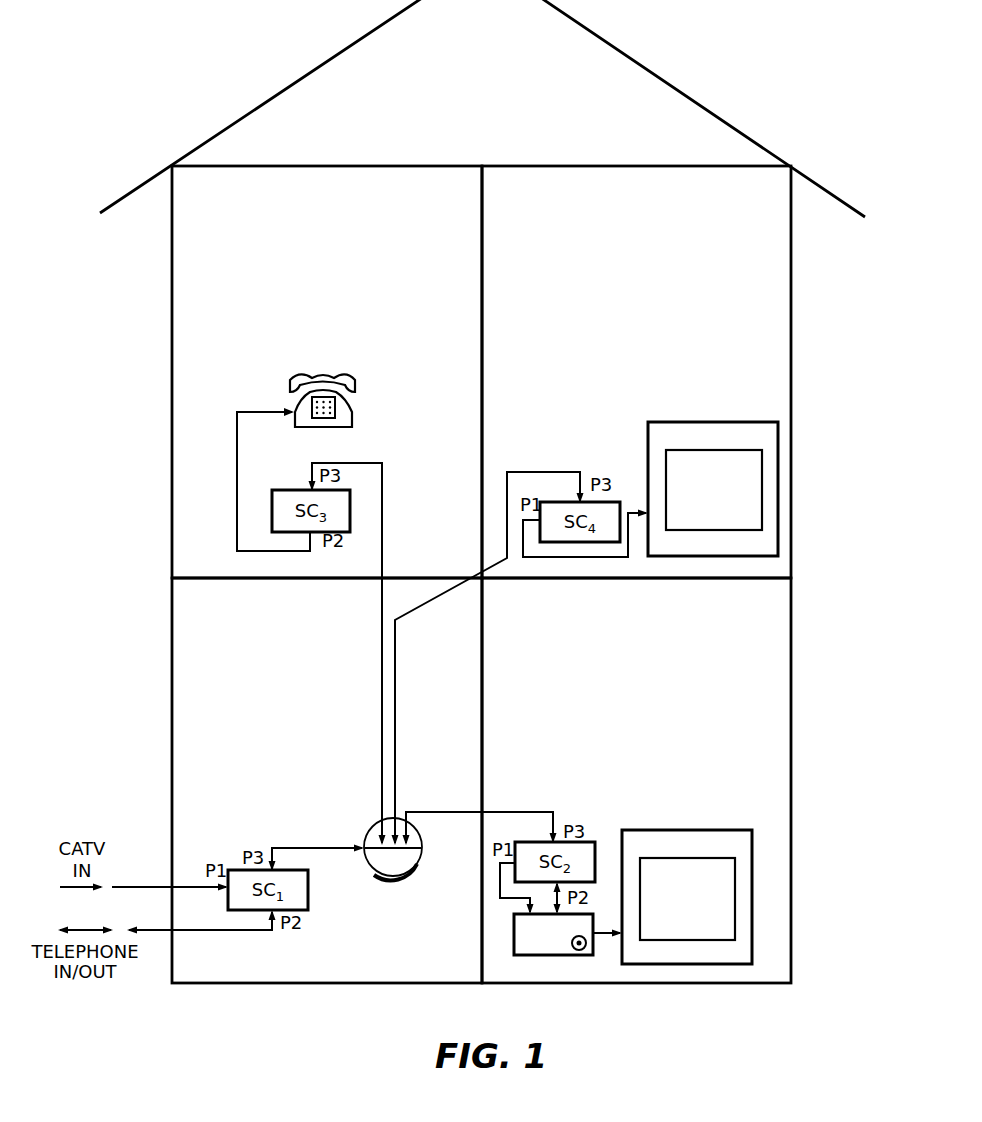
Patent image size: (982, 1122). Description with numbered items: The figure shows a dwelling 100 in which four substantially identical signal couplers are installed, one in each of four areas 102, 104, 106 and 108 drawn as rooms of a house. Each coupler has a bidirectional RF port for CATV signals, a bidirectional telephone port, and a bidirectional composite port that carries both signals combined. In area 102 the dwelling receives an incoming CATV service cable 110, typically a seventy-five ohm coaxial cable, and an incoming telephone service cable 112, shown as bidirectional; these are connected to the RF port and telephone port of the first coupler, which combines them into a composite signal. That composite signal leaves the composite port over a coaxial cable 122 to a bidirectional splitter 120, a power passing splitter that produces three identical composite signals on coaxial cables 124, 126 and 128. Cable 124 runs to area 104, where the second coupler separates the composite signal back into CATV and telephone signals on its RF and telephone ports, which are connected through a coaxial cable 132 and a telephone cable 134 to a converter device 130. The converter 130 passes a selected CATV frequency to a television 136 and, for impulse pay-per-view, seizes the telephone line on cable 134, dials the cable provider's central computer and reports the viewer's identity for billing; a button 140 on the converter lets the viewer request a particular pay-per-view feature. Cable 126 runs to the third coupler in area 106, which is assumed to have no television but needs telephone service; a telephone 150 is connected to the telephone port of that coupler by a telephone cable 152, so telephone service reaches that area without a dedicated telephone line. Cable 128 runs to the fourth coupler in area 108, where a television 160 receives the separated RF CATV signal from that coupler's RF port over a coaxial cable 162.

The dwelling 100 is at (148, 453).
The area 102 is at (188, 803).
The area 104 is at (763, 753).
The area 106 is at (182, 538).
The area 108 is at (775, 348).
The incoming CATV service cable 110 is at (152, 886).
The incoming telephone service cable 112 is at (144, 930).
The bidirectional splitter 120 is at (415, 877).
The coaxial cable 122 is at (290, 848).
The coaxial cable 124 is at (417, 812).
The coaxial cable 126 is at (380, 762).
The coaxial cable 128 is at (395, 750).
The converter device 130 is at (514, 948).
The coaxial cable 132 is at (500, 897).
The telephone cable 134 is at (555, 895).
The television 136 is at (668, 830).
The button 140 is at (575, 951).
The telephone 150 is at (355, 410).
The telephone cable 152 is at (237, 463).
The television 160 is at (698, 422).
The coaxial cable 162 is at (580, 558).